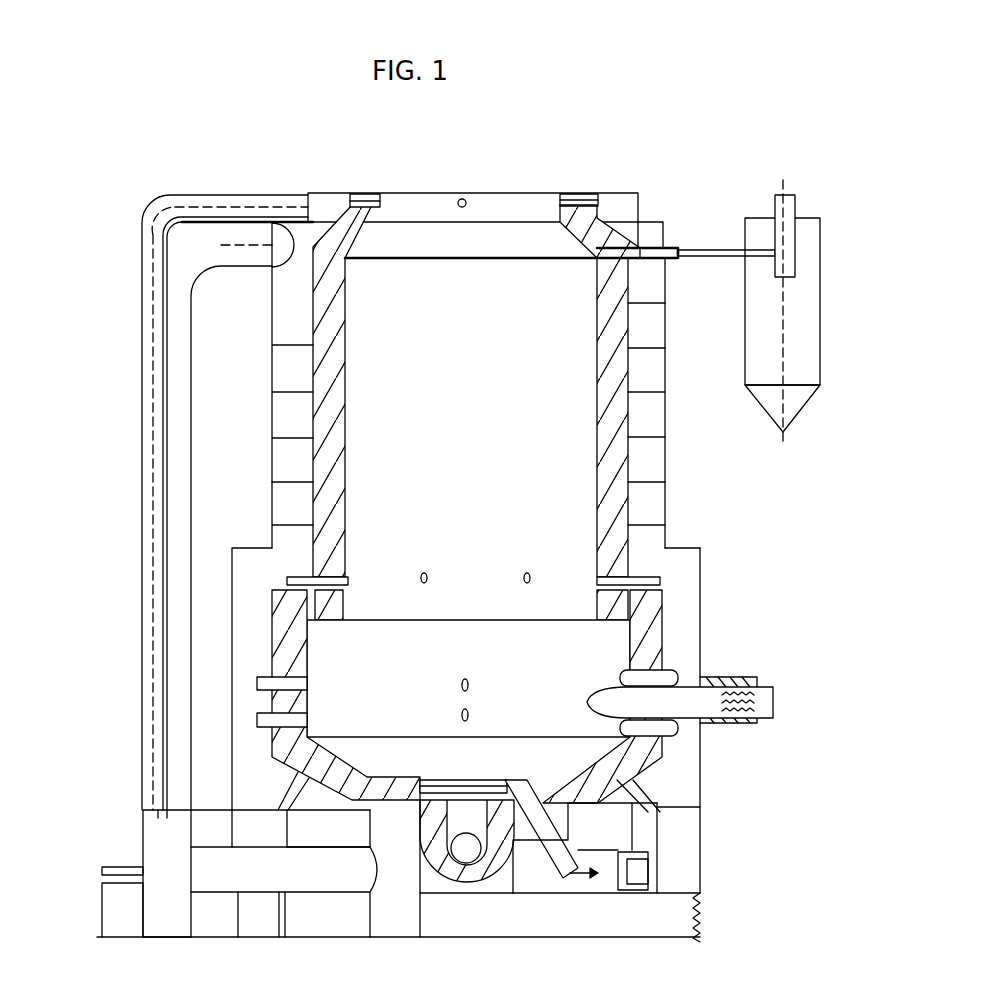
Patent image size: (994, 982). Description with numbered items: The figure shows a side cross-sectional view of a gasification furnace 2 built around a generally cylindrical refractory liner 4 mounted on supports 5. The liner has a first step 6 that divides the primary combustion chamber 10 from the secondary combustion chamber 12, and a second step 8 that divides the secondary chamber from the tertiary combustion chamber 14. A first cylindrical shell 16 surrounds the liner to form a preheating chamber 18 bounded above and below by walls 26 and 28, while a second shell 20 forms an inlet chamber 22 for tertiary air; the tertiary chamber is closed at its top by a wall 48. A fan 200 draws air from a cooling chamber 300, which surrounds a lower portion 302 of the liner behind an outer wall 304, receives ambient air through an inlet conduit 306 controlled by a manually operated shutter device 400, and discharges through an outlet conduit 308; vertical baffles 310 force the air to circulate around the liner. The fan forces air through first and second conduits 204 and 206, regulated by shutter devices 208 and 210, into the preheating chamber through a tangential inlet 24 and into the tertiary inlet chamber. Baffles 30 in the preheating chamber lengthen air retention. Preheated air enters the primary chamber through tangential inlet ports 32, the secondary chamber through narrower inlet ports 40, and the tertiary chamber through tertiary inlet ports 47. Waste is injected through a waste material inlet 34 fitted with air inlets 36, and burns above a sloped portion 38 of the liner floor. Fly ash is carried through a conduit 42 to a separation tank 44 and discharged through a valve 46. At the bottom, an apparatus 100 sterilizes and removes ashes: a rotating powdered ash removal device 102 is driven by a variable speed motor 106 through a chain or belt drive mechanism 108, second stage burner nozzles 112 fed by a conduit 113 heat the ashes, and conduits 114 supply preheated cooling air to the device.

The furnace 2 is at (690, 480).
The refractory liner 4 is at (640, 335).
The supports 5 is at (290, 810).
The first step 6 is at (645, 583).
The second step 8 is at (606, 217).
The primary combustion chamber 10 is at (542, 663).
The secondary combustion chamber 12 is at (532, 468).
The tertiary combustion chamber 14 is at (509, 216).
The first generally cylindrical shell 16 is at (665, 418).
The preheating chamber 18 is at (308, 335).
The second shell 20 is at (638, 200).
The inlet chamber 22 is at (330, 200).
The inlet 24 is at (275, 267).
The wall 26 is at (655, 230).
The wall 28 is at (700, 810).
The baffles 30 is at (287, 485).
The inlet ports 32 is at (262, 718).
The waste material inlet 34 is at (773, 706).
The air inlets 36 is at (728, 680).
The sloped portion 38 is at (600, 762).
The inlet ports 40 is at (300, 579).
The conduit 42 is at (682, 262).
The separation tank 44 is at (820, 343).
The valve 46 is at (785, 435).
The tertiary inlet ports 47 is at (366, 193).
The wall 48 is at (603, 193).
The apparatus 100 is at (443, 774).
The powdered ash removal device 102 is at (490, 780).
The variable speed motor 106 is at (648, 850).
The chain or belt drive mechanism 108 is at (578, 870).
The second stage burner nozzles 112 is at (420, 782).
The conduit 113 is at (597, 876).
The conduits 114 is at (343, 818).
The fan 200 is at (140, 840).
The first conduit 204 is at (175, 705).
The second conduit 206 is at (150, 718).
The shutter device 208 is at (145, 810).
The shutter device 210 is at (175, 805).
The cooling chamber 300 is at (392, 910).
The lower portion 302 is at (557, 818).
The outer wall 304 is at (368, 912).
The inlet conduit 306 is at (590, 937).
The outlet conduit 308 is at (240, 940).
The vertical baffles 310 is at (430, 920).
The manually operated shutter device 400 is at (705, 905).